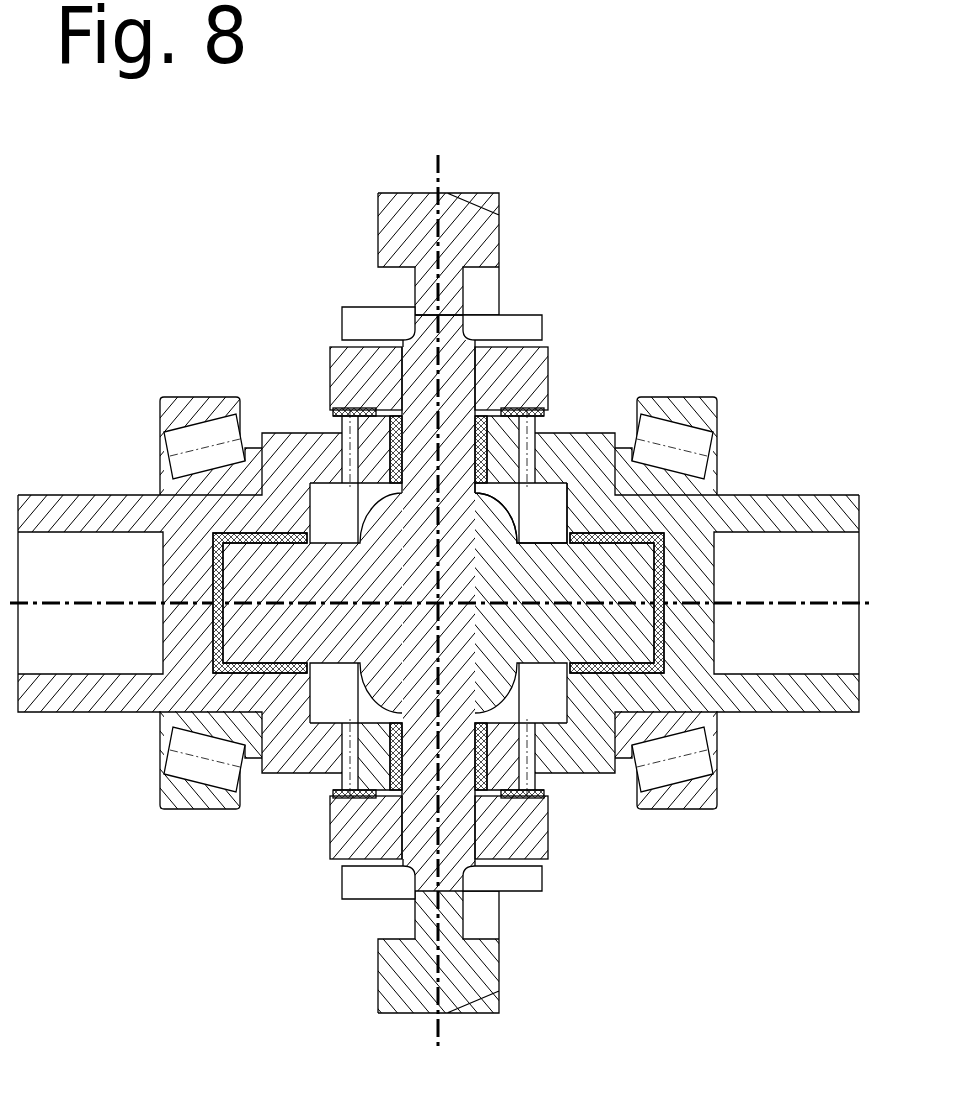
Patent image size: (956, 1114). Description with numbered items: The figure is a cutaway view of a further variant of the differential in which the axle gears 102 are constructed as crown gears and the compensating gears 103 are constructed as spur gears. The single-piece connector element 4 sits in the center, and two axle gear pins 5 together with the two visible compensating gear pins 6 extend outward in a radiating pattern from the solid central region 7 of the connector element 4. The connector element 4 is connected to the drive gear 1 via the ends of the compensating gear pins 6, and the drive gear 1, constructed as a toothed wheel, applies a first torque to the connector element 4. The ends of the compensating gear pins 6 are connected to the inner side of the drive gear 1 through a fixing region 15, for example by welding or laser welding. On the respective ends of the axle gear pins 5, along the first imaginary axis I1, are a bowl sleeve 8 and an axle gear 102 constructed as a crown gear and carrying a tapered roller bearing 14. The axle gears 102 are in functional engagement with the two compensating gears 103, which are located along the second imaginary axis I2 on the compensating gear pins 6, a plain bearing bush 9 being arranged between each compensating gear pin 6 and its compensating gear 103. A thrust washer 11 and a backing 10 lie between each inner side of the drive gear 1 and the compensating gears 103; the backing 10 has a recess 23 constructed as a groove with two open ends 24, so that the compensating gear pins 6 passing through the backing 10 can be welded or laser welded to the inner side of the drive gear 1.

The drive gear 1 is at (378, 245).
The connector element 4 is at (490, 540).
The axle gear pins 5 is at (585, 625).
The compensating gear pins 6 is at (423, 840).
The solid central region 7 is at (402, 575).
The bowl sleeve 8 is at (283, 668).
The plain bearing bush 9 is at (333, 793).
The backing 10 is at (527, 385).
The thrust washer 11 is at (397, 768).
The tapered roller bearing 14 is at (660, 430).
The fixing region 15 is at (450, 315).
The recess 23 is at (385, 325).
The open ends 24 is at (545, 330).
The axle gears 102 is at (690, 515).
The compensating gears 103 is at (370, 440).
The first imaginary axis I1 is at (440, 636).
The second imaginary axis I2 is at (464, 593).